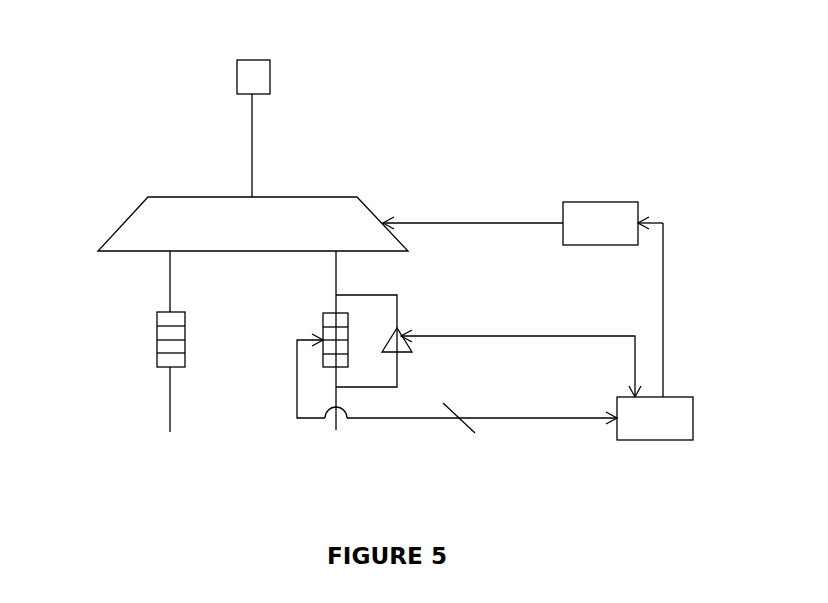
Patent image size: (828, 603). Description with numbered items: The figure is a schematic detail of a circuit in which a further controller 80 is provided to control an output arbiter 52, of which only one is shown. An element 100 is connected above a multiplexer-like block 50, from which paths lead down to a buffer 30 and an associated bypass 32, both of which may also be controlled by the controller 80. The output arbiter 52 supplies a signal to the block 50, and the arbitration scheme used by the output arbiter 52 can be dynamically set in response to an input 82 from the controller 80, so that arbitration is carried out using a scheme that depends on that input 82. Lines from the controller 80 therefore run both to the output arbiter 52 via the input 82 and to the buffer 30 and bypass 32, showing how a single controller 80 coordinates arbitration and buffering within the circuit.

The processor core / requester 100 is at (235, 60).
The multiplexer 50 is at (118, 232).
The output arbiter 52 is at (580, 202).
The input 82 is at (663, 260).
The buffer 30 is at (322, 315).
The bypass 32 is at (398, 305).
The controller 80 is at (695, 400).